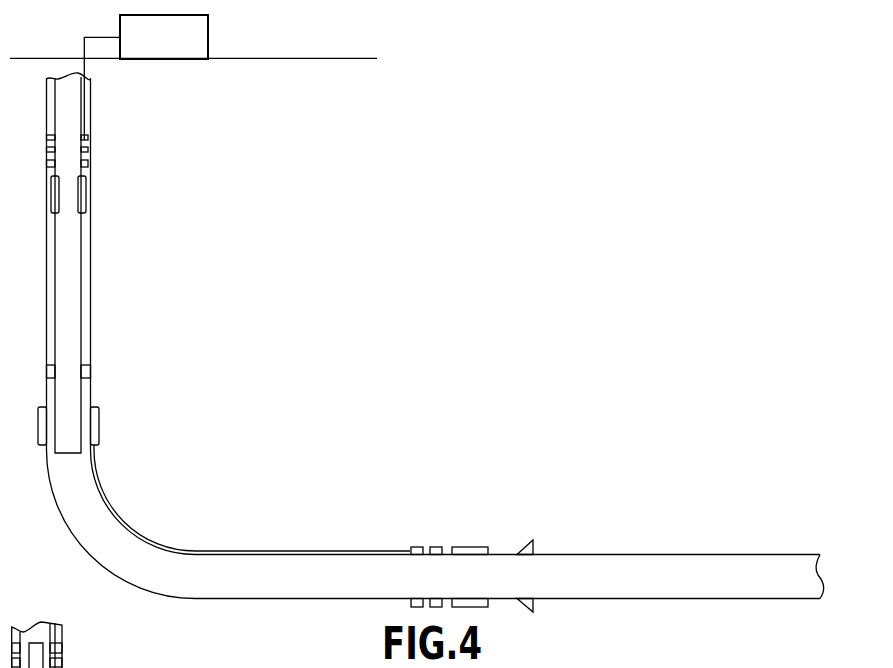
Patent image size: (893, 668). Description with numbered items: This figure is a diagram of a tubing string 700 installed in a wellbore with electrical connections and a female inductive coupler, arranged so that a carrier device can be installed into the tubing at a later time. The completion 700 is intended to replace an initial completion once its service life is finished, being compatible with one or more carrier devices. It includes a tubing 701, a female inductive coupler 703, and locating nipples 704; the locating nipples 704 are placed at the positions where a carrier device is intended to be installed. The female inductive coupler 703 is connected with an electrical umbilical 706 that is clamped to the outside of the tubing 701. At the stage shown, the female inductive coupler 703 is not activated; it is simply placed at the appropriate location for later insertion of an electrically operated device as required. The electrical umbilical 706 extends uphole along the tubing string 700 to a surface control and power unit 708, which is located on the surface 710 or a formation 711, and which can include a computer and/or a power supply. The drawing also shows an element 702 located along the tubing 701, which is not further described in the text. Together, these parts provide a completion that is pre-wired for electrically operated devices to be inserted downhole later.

The tubing string 700 is at (73, 105).
The tubing 701 is at (92, 123).
The packer 702 is at (85, 372).
The female inductive coupler 703 is at (83, 198).
The locating nipple 704 is at (87, 143).
The electrical umbilical 706 is at (84, 37).
The surface control and power unit 708 is at (197, 33).
The surface 710 is at (293, 58).
The formation 711 is at (288, 98).